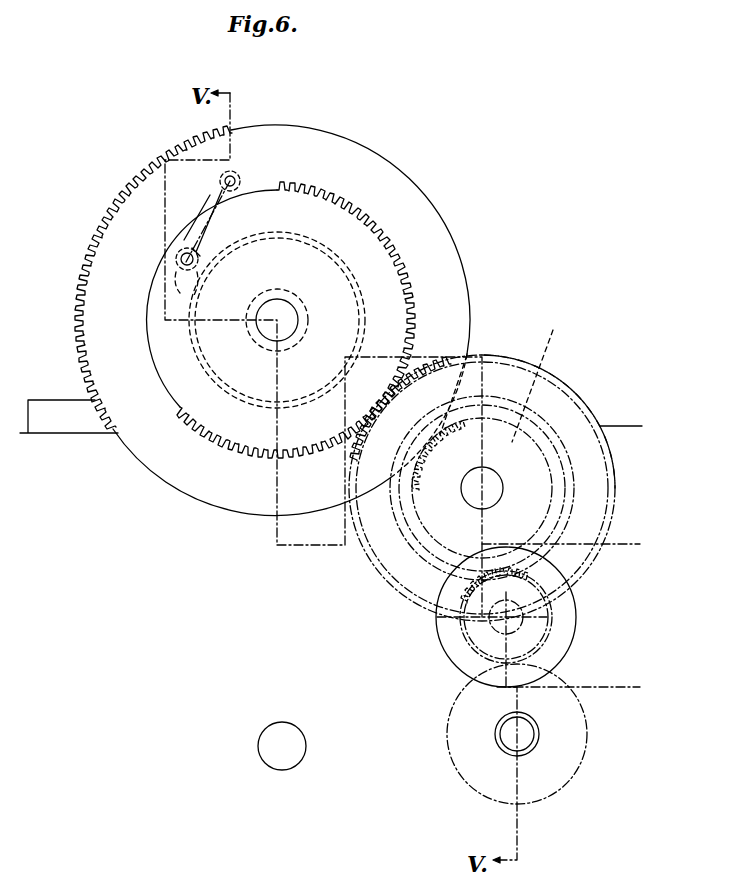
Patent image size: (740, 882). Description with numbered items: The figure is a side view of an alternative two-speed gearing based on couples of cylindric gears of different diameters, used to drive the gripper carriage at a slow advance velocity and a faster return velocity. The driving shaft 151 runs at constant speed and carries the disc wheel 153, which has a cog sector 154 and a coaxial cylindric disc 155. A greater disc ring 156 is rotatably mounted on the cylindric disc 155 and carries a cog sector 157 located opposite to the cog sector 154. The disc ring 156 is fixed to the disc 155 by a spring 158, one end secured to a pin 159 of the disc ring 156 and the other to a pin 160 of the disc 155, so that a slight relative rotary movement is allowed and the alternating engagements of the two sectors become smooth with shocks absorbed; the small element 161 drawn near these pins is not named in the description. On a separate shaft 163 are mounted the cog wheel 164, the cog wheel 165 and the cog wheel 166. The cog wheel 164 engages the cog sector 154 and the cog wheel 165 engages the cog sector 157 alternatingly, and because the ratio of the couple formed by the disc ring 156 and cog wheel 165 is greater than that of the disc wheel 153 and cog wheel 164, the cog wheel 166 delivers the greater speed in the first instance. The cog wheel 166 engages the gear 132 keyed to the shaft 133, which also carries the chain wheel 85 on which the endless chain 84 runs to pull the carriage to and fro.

The driving shaft 151 is at (268, 335).
The disc wheel 153 is at (295, 200).
The cog sector 154 is at (370, 213).
The cylindric disc 155 is at (305, 388).
The disc ring 156 is at (122, 228).
The cog sector 157 is at (146, 168).
The spring 158 is at (205, 218).
The pin 159 is at (237, 177).
The pin 160 is at (194, 263).
The spring 161 is at (197, 297).
The shaft 163 is at (468, 497).
The cog wheel 164 is at (495, 370).
The cog wheel 165 is at (482, 472).
The cog wheel 166 is at (482, 488).
The endless chain 84 is at (597, 547).
The chain wheel 85 is at (448, 645).
The shaft 133 is at (497, 632).
The gear 132 is at (472, 670).